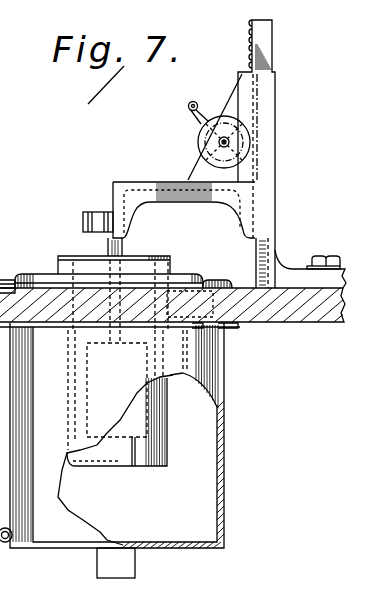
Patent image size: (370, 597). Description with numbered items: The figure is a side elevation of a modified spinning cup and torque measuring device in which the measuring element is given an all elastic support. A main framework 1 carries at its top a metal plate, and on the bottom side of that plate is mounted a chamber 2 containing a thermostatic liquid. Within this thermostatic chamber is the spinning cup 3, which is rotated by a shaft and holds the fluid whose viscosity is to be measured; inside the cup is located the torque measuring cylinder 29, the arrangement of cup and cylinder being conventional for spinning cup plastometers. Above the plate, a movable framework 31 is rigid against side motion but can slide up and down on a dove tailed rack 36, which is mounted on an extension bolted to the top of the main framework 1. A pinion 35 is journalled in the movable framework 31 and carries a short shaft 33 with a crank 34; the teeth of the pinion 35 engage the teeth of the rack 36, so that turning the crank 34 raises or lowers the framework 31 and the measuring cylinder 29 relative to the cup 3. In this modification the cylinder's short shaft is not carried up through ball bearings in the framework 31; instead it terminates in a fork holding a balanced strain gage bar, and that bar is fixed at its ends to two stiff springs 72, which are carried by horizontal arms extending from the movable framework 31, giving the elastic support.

The main framework 1 is at (287, 323).
The chamber 2 is at (225, 473).
The spinning cup 3 is at (185, 431).
The torque measuring cylinder 29 is at (120, 438).
The movable framework 31 is at (268, 127).
The short shaft 33 is at (230, 143).
The crank 34 is at (189, 112).
The pinion 35 is at (198, 143).
The dove tailed rack 36 is at (250, 57).
The stiff springs 72 is at (83, 220).